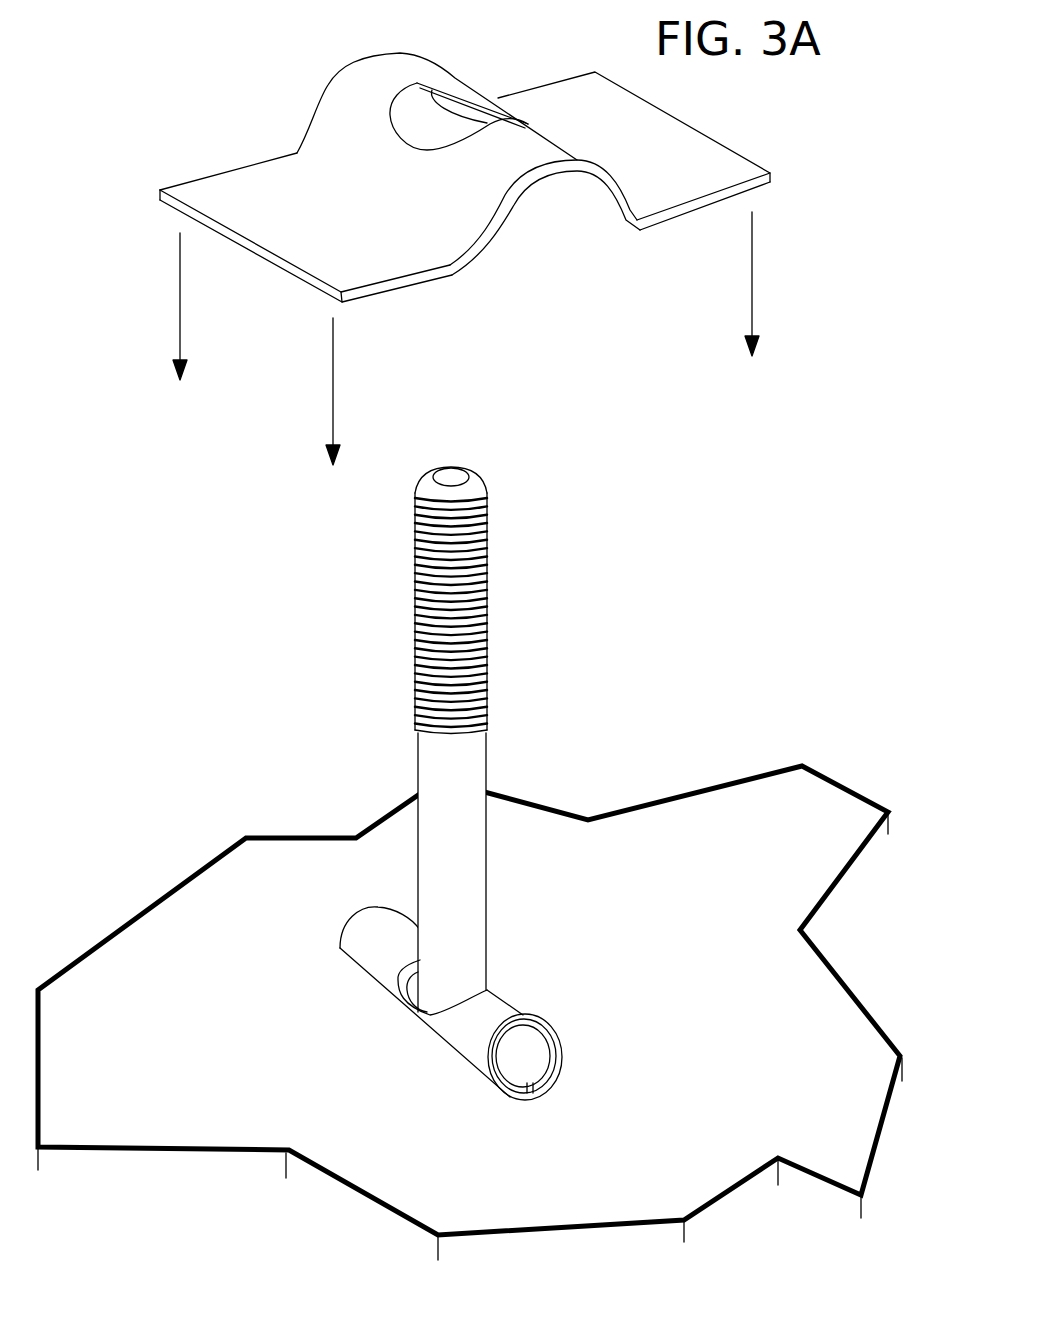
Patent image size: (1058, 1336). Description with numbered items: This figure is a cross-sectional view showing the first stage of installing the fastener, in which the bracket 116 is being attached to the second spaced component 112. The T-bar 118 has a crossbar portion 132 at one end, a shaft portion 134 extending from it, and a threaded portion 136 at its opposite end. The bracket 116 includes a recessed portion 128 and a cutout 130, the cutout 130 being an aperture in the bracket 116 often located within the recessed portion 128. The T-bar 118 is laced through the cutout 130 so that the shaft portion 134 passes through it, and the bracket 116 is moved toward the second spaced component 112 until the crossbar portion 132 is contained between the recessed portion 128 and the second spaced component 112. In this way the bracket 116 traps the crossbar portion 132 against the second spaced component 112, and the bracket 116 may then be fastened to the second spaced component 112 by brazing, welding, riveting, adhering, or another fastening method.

The second spaced component 112 is at (170, 1046).
The bracket 116 is at (418, 252).
The T-bar 118 is at (404, 1031).
The recessed portion 128 is at (302, 148).
The cutout 130 is at (470, 83).
The crossbar portion 132 is at (503, 1013).
The shaft portion 134 is at (458, 778).
The threaded portion 136 is at (413, 577).